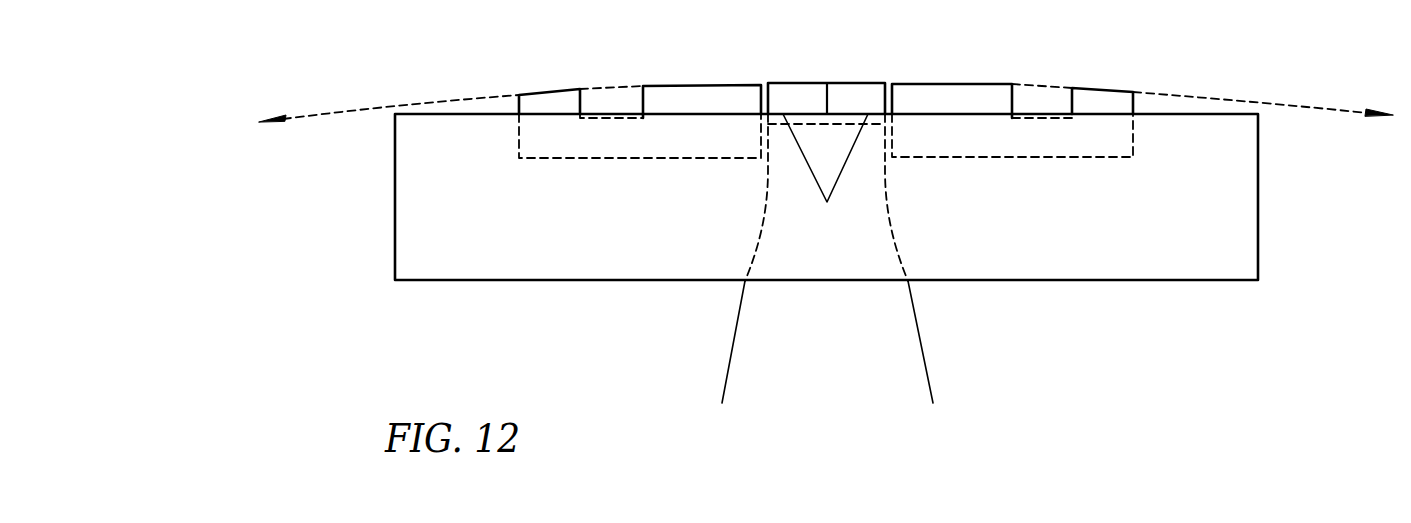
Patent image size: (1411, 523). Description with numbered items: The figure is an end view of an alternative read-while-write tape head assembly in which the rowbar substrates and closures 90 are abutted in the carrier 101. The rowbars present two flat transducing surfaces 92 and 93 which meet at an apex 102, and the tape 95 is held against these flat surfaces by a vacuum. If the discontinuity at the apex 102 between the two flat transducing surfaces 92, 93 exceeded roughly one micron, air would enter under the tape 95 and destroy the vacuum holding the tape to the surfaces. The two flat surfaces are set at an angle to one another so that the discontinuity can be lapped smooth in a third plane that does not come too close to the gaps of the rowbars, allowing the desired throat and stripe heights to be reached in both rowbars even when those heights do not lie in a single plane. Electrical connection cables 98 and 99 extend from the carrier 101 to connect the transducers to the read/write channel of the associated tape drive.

The rowbar substrates and closures 90 is at (825, 178).
The first flat transducing surface 92 is at (700, 85).
The second flat transducing surface 93 is at (950, 84).
The tape 95 is at (1199, 97).
The first electrical connection cable 98 is at (725, 368).
The second electrical connection cable 99 is at (928, 366).
The carrier 101 is at (1260, 248).
The apex 102 is at (827, 83).